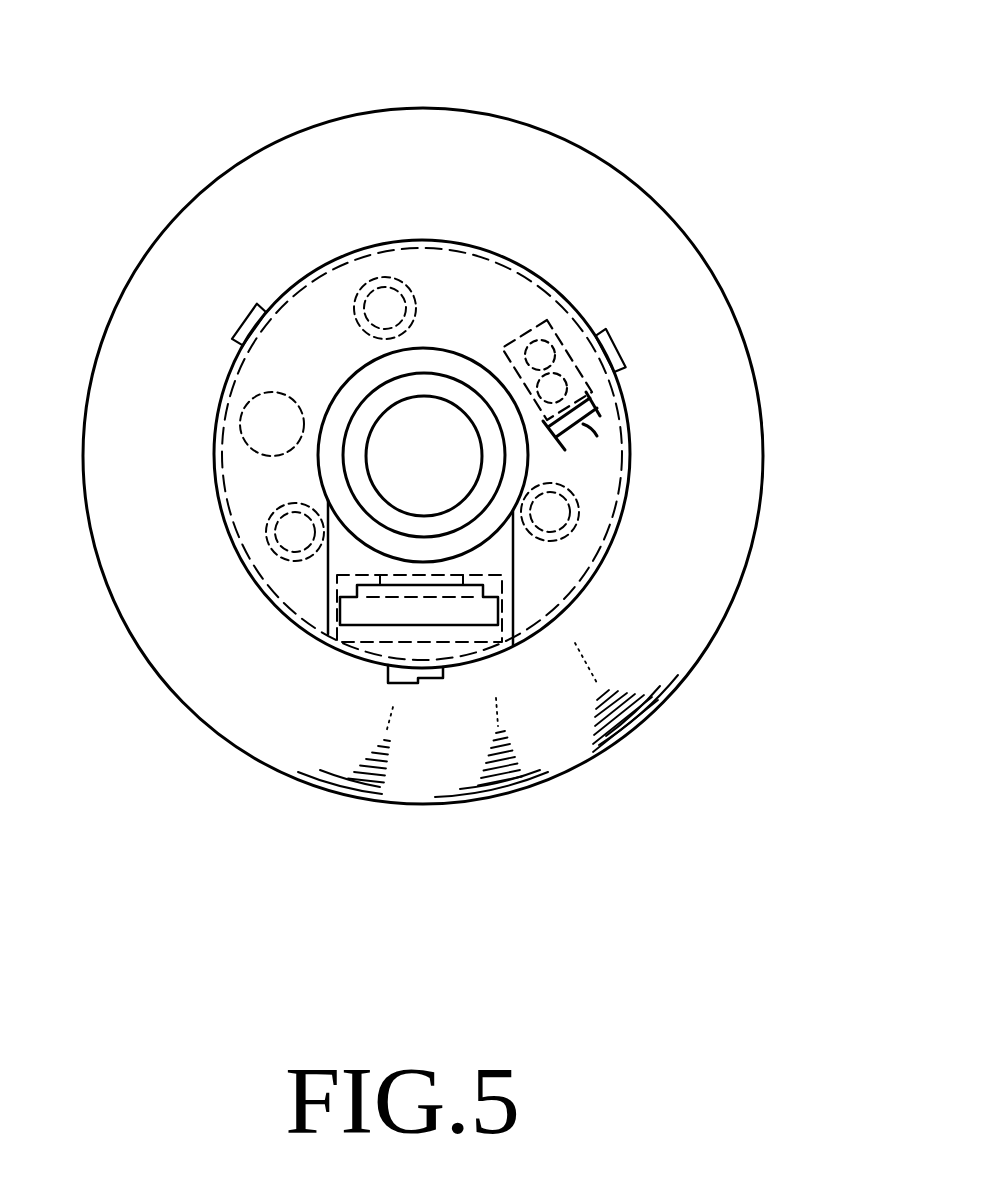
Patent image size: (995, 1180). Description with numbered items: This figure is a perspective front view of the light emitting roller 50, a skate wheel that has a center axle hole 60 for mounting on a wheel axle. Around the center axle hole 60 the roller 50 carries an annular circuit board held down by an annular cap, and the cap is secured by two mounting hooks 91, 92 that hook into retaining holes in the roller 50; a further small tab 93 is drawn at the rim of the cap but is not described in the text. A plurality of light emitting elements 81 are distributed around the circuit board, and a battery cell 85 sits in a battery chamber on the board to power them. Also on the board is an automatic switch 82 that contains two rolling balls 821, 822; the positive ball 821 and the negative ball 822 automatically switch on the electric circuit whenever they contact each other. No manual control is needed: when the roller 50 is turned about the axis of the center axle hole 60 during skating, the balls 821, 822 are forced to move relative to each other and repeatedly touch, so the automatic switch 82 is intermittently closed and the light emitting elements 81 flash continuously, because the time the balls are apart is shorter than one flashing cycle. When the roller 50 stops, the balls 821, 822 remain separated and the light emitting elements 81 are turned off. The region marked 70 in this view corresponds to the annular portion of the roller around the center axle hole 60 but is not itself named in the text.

The roller 50 is at (205, 252).
The center axle hole 60 is at (373, 420).
The inner plate 70 is at (445, 297).
The light emitting elements 81 is at (283, 553).
The automatic switch 82 is at (683, 266).
The rolling ball 821 is at (544, 322).
The rolling ball 822 is at (563, 349).
The battery cell 85 is at (380, 618).
The mounting hook 91 is at (242, 333).
The mounting hook 92 is at (432, 686).
The positioning tab 93 is at (625, 360).